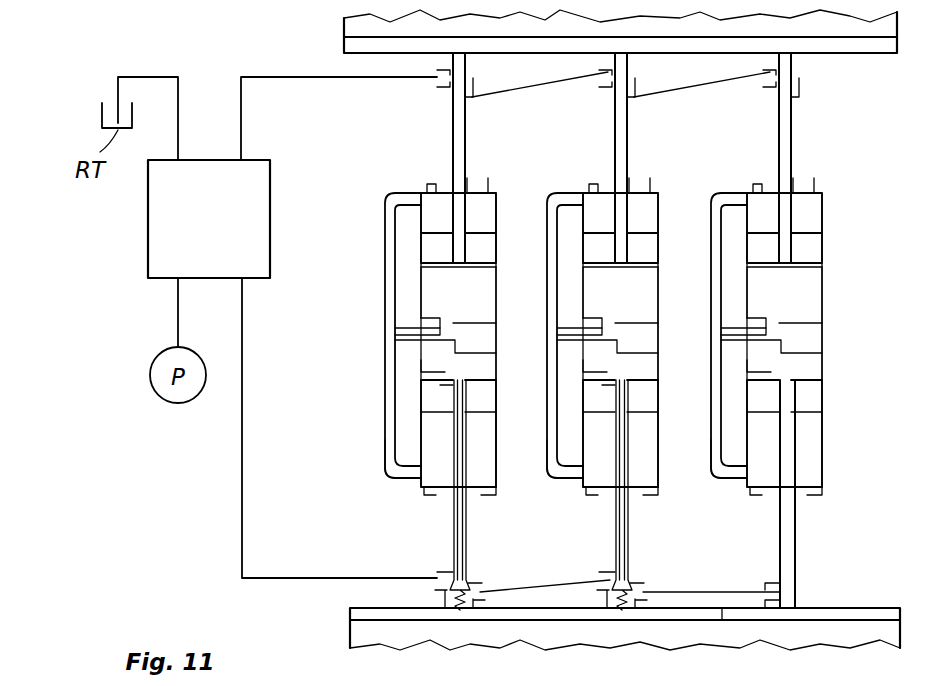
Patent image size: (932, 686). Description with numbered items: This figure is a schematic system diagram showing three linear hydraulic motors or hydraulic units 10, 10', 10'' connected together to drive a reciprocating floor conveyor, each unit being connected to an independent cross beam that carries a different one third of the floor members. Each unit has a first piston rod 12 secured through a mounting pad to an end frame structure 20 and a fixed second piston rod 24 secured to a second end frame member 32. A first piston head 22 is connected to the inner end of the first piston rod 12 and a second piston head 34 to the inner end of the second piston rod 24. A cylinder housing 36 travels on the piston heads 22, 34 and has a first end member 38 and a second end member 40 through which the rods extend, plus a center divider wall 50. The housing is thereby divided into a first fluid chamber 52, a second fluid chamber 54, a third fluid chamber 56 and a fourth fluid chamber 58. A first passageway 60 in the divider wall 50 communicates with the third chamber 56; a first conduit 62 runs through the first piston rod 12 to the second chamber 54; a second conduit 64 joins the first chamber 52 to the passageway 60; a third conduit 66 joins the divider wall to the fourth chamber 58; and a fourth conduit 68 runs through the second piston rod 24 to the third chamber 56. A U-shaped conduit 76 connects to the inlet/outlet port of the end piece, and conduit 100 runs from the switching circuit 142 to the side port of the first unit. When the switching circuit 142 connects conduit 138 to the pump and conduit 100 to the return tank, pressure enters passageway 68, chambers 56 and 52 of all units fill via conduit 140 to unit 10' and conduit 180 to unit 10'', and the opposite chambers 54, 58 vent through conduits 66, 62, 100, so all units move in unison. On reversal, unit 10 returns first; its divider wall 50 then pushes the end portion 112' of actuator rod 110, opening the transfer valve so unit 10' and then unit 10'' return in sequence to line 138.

The linear hydraulic motor 10 is at (423, 367).
The adjoining linear hydraulic motor 10' is at (597, 362).
The third hydraulic unit 10'' is at (773, 375).
The first piston rod 12 is at (452, 128).
The end frame structure 20 is at (878, 56).
The first piston head 22 is at (490, 245).
The second piston rod 24 is at (468, 560).
The second end frame member 32 is at (878, 606).
The second piston head 34 is at (421, 410).
The cylinder housing 36 is at (496, 290).
The first end member 38 is at (480, 188).
The second end member 40 is at (421, 490).
The center divider wall 50 is at (490, 343).
The first fluid chamber 52 is at (427, 192).
The second fluid chamber 54 is at (435, 285).
The third fluid chamber 56 is at (430, 370).
The fourth fluid chamber 58 is at (425, 455).
The first passageway 60 is at (440, 343).
The first conduit 62 is at (452, 103).
The second conduit 64 is at (385, 245).
The third conduit 66 is at (385, 440).
The fourth conduit 68 is at (466, 515).
The conduit 76 is at (555, 89).
The conduit 100 is at (327, 78).
The operator rod 110 is at (453, 550).
The inner end of operator rod 112' is at (506, 386).
The conduit 138 is at (242, 540).
The conduit 140 is at (540, 586).
The switching circuit 142 is at (148, 258).
The conduit 180 is at (722, 612).